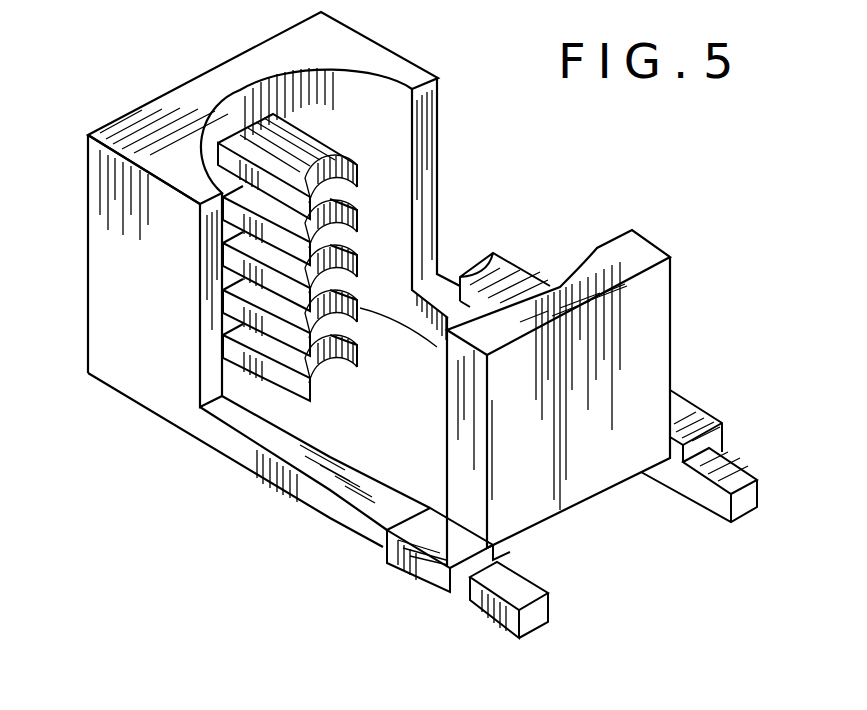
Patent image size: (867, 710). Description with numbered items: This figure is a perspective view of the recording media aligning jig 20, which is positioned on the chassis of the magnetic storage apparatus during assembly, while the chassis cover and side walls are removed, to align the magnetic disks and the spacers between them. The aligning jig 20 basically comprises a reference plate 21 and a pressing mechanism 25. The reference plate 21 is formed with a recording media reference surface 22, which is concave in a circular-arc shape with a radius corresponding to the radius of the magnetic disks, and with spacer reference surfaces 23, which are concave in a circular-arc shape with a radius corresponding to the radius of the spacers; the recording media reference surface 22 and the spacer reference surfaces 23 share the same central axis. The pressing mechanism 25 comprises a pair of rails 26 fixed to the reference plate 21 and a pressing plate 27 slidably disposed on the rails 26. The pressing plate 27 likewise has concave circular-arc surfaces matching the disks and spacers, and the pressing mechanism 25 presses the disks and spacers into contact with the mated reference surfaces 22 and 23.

The recording media aligning jig 20 is at (148, 412).
The reference plate 21 is at (141, 104).
The recording media reference surface 22 is at (400, 135).
The spacer reference surfaces 23 is at (350, 227).
The pressing mechanism 25 is at (647, 231).
The rails 26 is at (242, 457).
The pressing plate 27 is at (668, 338).